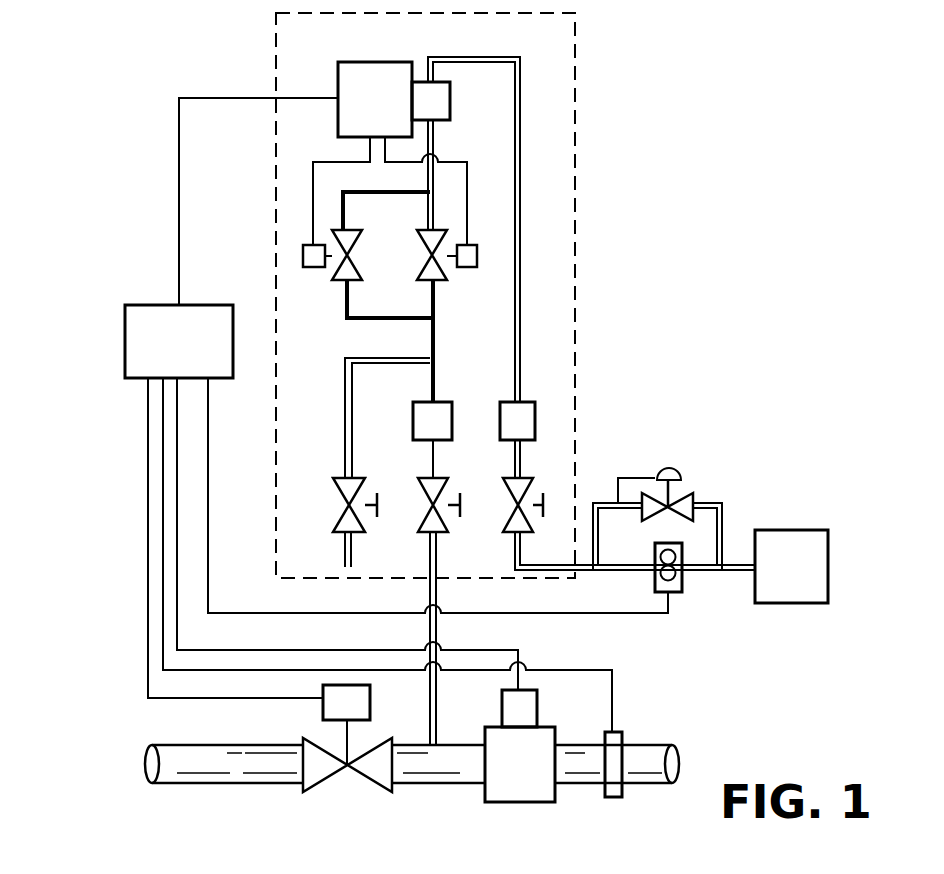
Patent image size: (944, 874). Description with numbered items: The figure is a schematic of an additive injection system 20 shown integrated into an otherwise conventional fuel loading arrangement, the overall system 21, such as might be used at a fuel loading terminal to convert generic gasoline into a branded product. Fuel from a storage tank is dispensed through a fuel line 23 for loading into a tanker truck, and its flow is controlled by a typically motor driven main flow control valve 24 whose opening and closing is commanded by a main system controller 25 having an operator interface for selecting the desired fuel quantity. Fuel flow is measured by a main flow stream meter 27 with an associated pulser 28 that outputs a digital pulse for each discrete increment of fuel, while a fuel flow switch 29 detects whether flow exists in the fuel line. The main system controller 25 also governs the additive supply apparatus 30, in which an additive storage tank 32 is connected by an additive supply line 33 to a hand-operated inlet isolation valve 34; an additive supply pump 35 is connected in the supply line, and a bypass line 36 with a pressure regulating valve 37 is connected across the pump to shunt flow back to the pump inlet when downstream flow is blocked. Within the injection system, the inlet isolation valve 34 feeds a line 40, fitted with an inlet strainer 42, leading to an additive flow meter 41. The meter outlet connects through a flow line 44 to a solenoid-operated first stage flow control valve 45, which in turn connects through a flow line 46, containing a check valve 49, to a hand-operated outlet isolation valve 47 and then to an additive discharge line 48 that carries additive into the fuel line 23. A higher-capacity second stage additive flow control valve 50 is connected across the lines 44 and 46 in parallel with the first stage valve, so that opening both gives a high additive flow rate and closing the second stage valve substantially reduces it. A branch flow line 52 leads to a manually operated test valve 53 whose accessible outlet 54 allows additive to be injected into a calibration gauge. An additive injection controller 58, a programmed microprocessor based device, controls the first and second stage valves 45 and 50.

The additive injection system 20 is at (578, 173).
The overall system 21 is at (140, 197).
The fuel line 23 is at (170, 785).
The main flow control valve 24 is at (365, 780).
The main system controller 25 is at (125, 338).
The main flow stream meter 27 is at (508, 802).
The pulser 28 is at (502, 712).
The fuel flow switch 29 is at (610, 800).
The additive supply apparatus 30 is at (657, 462).
The additive storage tank 32 is at (800, 530).
The additive supply line 33 is at (625, 570).
The inlet isolation valve 34 is at (505, 500).
The additive supply pump 35 is at (682, 575).
The bypass line 36 is at (722, 525).
The pressure regulating valve 37 is at (690, 493).
The line 40 is at (522, 272).
The additive flow meter 41 is at (450, 100).
The inlet strainer 42 is at (535, 425).
The flow line 44 is at (428, 205).
The first stage flow control valve 45 is at (466, 267).
The flow line 46 is at (433, 340).
The outlet isolation valve 47 is at (425, 515).
The additive discharge line 48 is at (428, 722).
The check valve 49 is at (413, 425).
The second stage additive flow control valve 50 is at (314, 267).
The branch flow line 52 is at (345, 400).
The test valve 53 is at (338, 500).
The outlet 54 is at (345, 553).
The additive injection controller 58 is at (373, 62).